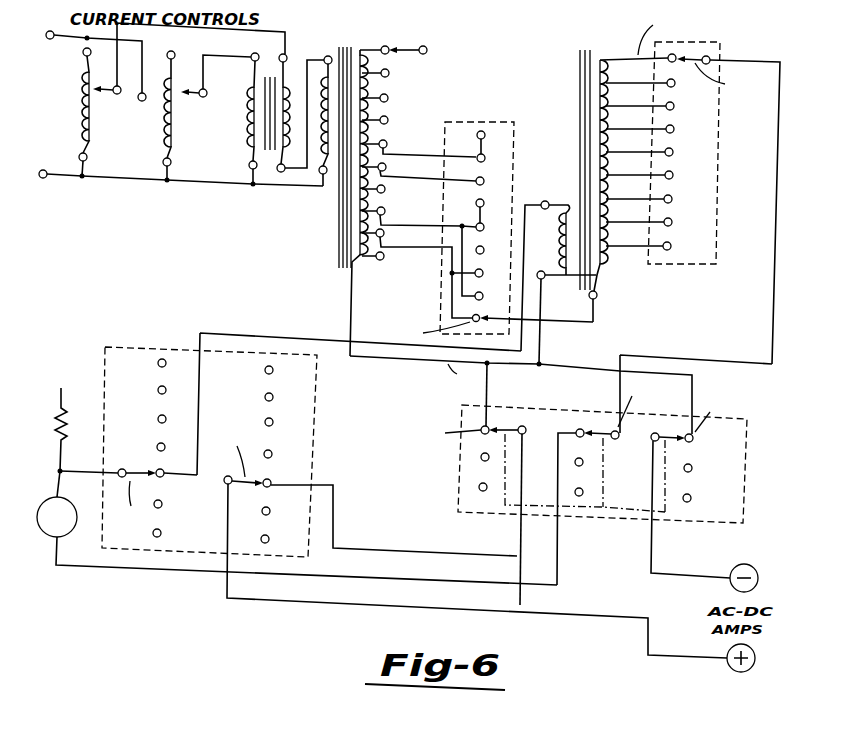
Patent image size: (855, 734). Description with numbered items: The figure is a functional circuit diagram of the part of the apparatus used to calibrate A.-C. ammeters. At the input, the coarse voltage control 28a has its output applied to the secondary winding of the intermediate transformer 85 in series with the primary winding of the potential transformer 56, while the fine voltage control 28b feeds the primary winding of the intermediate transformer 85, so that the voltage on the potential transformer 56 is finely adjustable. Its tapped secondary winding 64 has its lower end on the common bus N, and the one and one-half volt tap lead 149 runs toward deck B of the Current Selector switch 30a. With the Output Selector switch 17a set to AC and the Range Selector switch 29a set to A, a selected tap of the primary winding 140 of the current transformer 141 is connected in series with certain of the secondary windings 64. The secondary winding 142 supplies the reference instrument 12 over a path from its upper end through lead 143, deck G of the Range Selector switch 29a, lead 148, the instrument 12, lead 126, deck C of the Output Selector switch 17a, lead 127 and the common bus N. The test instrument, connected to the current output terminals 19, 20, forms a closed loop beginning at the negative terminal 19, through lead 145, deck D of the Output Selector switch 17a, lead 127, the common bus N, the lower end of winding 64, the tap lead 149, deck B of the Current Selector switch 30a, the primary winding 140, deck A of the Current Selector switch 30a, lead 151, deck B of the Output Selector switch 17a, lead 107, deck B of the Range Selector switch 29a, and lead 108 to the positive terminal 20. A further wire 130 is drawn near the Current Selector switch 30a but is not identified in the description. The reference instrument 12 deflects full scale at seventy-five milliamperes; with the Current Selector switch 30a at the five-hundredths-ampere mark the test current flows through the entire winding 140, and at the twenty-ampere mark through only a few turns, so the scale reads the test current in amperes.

The intermediate transformer 85 is at (238, 119).
The coarse voltage control 28a is at (93, 127).
The fine voltage control 28b is at (177, 148).
The potential transformer 56 is at (328, 228).
The secondary winding of the potential transformer 64 is at (356, 264).
The 1.5 volt tap lead 149 is at (452, 288).
The Current Selector switch 30a is at (562, 180).
The conductor 130 is at (432, 158).
The current transformer 141 is at (650, 207).
The primary winding of the current transformer 140 is at (600, 272).
The secondary winding of the current transformer 142 is at (566, 270).
The lead 143 is at (541, 341).
The lead 151 is at (757, 361).
The lead 127 is at (487, 393).
The lead 148 is at (83, 470).
The reference instrument 12 is at (45, 498).
The lead 126 is at (78, 567).
The Range Selector switch 29a is at (313, 449).
The lead 108 is at (352, 548).
The lead 107 is at (558, 529).
The lead 145 is at (676, 573).
The negative apparatus terminal 19 is at (753, 566).
The positive apparatus terminal 20 is at (745, 673).
The Output Selector switch 17a is at (595, 491).